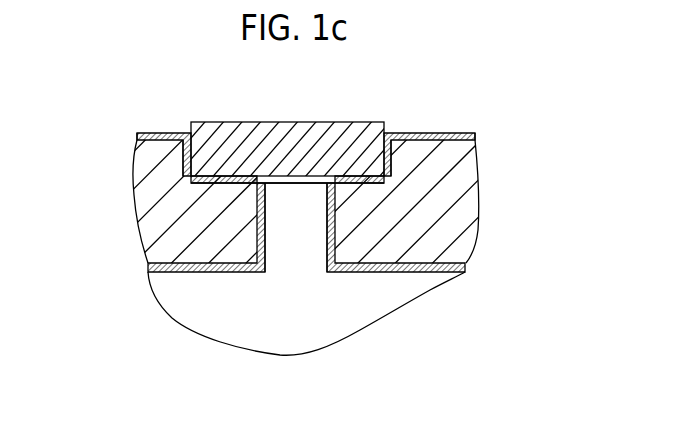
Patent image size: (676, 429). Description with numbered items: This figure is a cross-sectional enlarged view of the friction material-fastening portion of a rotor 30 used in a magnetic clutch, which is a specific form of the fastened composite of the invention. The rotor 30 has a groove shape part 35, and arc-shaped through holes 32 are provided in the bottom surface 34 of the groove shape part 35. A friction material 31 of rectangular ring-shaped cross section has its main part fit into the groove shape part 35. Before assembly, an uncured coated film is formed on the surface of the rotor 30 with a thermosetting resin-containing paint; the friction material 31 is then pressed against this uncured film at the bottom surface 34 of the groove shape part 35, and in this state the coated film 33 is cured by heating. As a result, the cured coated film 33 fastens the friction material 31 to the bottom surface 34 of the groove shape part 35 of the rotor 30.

The rotor 30 is at (447, 182).
The friction material 31 is at (229, 131).
The through hole 32 is at (295, 257).
The coated film 33 is at (350, 176).
The bottom surface 34 is at (220, 185).
The groove shape part 35 is at (183, 157).